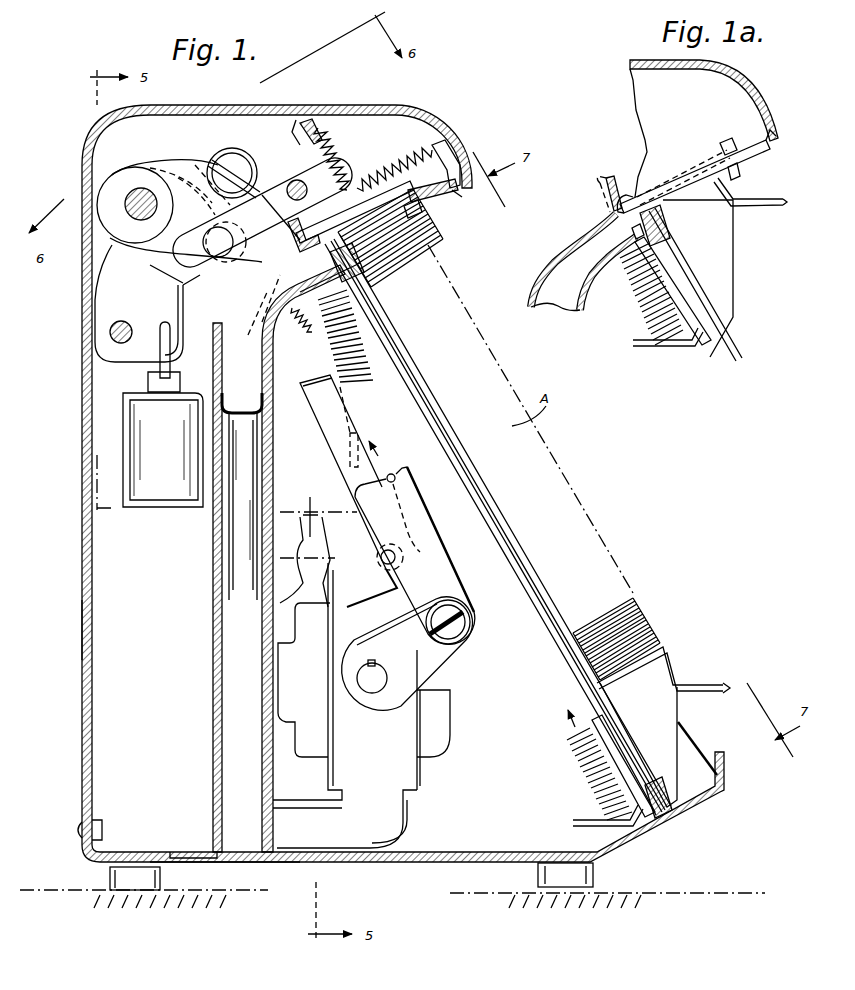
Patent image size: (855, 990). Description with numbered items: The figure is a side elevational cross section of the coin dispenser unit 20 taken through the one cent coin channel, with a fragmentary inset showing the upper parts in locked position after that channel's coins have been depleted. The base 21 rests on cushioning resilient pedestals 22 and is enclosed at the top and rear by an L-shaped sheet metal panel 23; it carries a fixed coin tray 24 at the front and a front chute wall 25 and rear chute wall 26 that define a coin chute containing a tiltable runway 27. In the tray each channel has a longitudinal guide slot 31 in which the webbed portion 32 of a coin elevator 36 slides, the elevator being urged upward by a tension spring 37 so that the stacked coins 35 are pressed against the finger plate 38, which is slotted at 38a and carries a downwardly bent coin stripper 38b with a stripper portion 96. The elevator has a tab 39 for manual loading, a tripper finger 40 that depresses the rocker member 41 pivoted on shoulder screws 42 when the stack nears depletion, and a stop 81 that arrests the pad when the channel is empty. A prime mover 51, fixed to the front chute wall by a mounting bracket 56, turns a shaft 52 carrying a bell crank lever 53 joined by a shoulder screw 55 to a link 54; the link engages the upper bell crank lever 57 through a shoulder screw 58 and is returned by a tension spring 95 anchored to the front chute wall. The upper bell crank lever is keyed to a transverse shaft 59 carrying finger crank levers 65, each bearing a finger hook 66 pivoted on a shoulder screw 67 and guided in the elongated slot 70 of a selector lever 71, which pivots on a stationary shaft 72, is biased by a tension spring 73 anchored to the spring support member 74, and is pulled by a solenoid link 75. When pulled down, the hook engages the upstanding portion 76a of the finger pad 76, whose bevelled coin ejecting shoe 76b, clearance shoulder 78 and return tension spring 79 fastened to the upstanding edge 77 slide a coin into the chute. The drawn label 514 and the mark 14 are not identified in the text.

In FIG. 1, the dispenser unit 20 is at (75, 140).
In FIG. 1, the base 21 is at (248, 864).
In FIG. 1, the cushioning resilient pedestals 22 is at (120, 880).
In FIG. 1, the L-shaped sheet metal panel 23 is at (82, 622).
In FIG. 1, the coin tray 24 is at (690, 752).
In FIG. 1, the front chute wall 25 is at (267, 780).
In FIG. 1, the rear chute wall 26 is at (222, 672).
In FIG. 1, the tiltable runway 27 is at (238, 568).
In FIG. 1, the longitudinal guide slot 31 is at (536, 592).
In FIG. 1A, the longitudinal guide slot 31 is at (735, 348).
In FIG. 1, the webbed portion 32 is at (627, 750).
In FIG. 1A, the webbed portion 32 is at (690, 275).
In FIG. 1, the coins 35 is at (643, 612).
In FIG. 1, the coin elevator 36 is at (656, 676).
In FIG. 1A, the coin elevator 36 is at (726, 272).
In FIG. 1, the tension spring 37 is at (342, 336).
In FIG. 1A, the tension spring 37 is at (646, 305).
In FIG. 1, the finger plate 38 is at (360, 206).
In FIG. 1A, the finger plate 38 is at (668, 178).
In FIG. 1, the slot 38a is at (326, 260).
In FIG. 1A, the coin stripper 38b is at (768, 146).
In FIG. 1, the tab 39 is at (716, 684).
In FIG. 1A, the tab 39 is at (775, 208).
In FIG. 1, the tripper finger 40 is at (593, 822).
In FIG. 1A, the tripper finger 40 is at (660, 346).
In FIG. 1, the rocker member 41 is at (324, 448).
In FIG. 1, the shoulder screws 42 is at (384, 570).
In FIG. 1, the prime mover 51 is at (440, 722).
In FIG. 1, the solenoid box 514 is at (150, 451).
In FIG. 1, the shaft 52 is at (386, 676).
In FIG. 1, the bell crank lever 53 is at (388, 634).
In FIG. 1, the link 54 is at (264, 178).
In FIG. 1, the shoulder screw 55 is at (470, 620).
In FIG. 1, the mounting bracket 56 is at (408, 802).
In FIG. 1, the upper bell crank lever 57 is at (178, 166).
In FIG. 1, the shoulder screw 58 is at (238, 158).
In FIG. 1, the shaft 59 is at (132, 190).
In FIG. 1, the finger crank lever 65 is at (205, 162).
In FIG. 1, the finger hook 66 is at (308, 196).
In FIG. 1, the shoulder screw 67 is at (237, 254).
In FIG. 1, the elongated slot 70 is at (205, 266).
In FIG. 1, the selector lever 71 is at (186, 278).
In FIG. 1, the stationary shaft 72 is at (121, 322).
In FIG. 1, the tension spring 73 is at (336, 150).
In FIG. 1, the spring support member 74 is at (308, 122).
In FIG. 1, the solenoid link 75 is at (170, 362).
In FIG. 1, the finger pad 76 is at (406, 190).
In FIG. 1A, the finger pad 76 is at (700, 158).
In FIG. 1, the upstanding portion 76a is at (302, 240).
In FIG. 1, the coin ejecting shoe 76b is at (458, 198).
In FIG. 1, the upstanding edge 77 is at (450, 152).
In FIG. 1, the shoulder 78 is at (457, 190).
In FIG. 1, the tension spring 79 is at (392, 170).
In FIG. 1, the stop 81 is at (665, 648).
In FIG. 1A, the stop 81 is at (724, 142).
In FIG. 1, the tension spring 95 is at (308, 328).
In FIG. 1, the stripper portion 96 is at (424, 212).
In FIG. 1A, the stripper portion 96 is at (741, 174).
In FIG. 1, the cartridge 14 is at (598, 591).